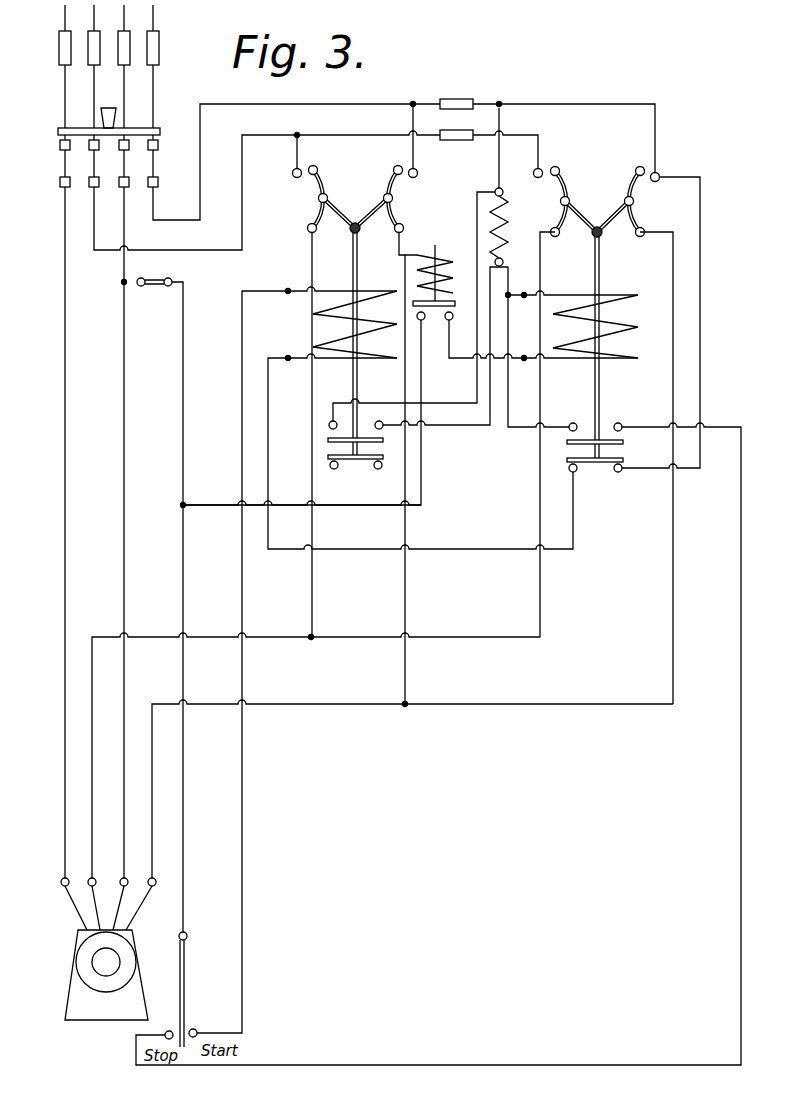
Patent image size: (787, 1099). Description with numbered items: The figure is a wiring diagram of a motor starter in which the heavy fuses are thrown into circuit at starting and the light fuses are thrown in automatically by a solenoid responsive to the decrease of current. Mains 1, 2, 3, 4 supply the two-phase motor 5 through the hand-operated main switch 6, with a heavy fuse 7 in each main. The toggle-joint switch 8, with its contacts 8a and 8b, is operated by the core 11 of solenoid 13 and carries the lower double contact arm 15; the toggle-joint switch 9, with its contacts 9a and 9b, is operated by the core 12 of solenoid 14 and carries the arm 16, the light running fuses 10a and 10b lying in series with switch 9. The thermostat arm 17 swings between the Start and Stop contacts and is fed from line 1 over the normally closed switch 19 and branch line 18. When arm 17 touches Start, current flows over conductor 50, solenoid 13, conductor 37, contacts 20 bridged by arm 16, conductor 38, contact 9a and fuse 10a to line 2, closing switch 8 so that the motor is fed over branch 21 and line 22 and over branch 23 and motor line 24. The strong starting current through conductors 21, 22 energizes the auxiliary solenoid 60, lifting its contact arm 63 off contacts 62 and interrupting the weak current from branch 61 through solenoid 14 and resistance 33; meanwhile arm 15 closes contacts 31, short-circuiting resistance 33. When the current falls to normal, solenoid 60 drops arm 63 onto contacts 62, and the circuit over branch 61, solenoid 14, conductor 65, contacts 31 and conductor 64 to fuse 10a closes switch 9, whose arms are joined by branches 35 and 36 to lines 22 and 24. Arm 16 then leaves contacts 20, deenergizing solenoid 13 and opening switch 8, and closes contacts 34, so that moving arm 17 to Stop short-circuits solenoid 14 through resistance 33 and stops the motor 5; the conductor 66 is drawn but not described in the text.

The main 1 is at (124, 18).
The main 2 is at (153, 18).
The main 3 is at (65, 18).
The main 4 is at (94, 18).
The motor 5 is at (72, 956).
The main switch 6 is at (60, 131).
The heavy fuses 7 is at (59, 60).
The automatic switch 8 is at (356, 200).
The switch contact 8a is at (410, 169).
The switch terminal 8b is at (300, 167).
The automatic switch 9 is at (598, 202).
The switch contact 9a is at (650, 171).
The switch contact 9b is at (541, 169).
The running fuse 10a is at (452, 96).
The running fuse 10b is at (462, 141).
The solenoid core 11 is at (358, 278).
The solenoid core 12 is at (600, 277).
The solenoid 13 is at (374, 305).
The solenoid 14 is at (578, 324).
The contact arm 15 is at (328, 457).
The contact arm 16 is at (623, 442).
The thermostat arm 17 is at (190, 962).
The branch line 18 is at (183, 432).
The switch 19 is at (152, 287).
The contacts 20 is at (576, 472).
The branch 21 is at (411, 590).
The line 22 is at (152, 792).
The branch 23 is at (312, 406).
The motor line 24 is at (92, 769).
The contacts 31 is at (345, 420).
The resistance 33 is at (512, 226).
The contacts 34 is at (577, 423).
The branch 35 is at (675, 552).
The branch 36 is at (540, 500).
The conductor 37 is at (440, 556).
The conductor 38 is at (702, 333).
The conductor 50 is at (249, 765).
The auxiliary solenoid 60 is at (452, 262).
The branch 61 is at (424, 480).
The contacts 62 is at (423, 321).
The contact arm 63 is at (447, 301).
The conductor 64 is at (477, 205).
The conductor 65 is at (485, 427).
The conductor 66 is at (524, 431).